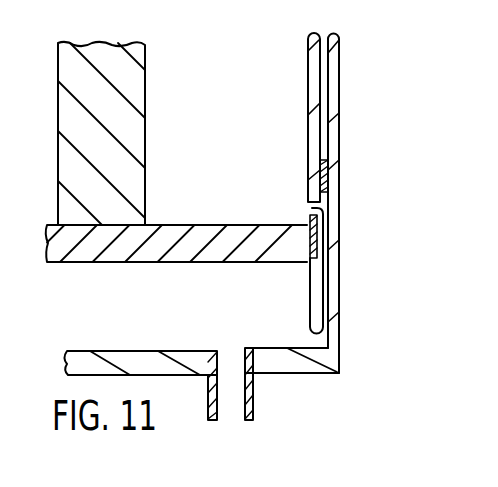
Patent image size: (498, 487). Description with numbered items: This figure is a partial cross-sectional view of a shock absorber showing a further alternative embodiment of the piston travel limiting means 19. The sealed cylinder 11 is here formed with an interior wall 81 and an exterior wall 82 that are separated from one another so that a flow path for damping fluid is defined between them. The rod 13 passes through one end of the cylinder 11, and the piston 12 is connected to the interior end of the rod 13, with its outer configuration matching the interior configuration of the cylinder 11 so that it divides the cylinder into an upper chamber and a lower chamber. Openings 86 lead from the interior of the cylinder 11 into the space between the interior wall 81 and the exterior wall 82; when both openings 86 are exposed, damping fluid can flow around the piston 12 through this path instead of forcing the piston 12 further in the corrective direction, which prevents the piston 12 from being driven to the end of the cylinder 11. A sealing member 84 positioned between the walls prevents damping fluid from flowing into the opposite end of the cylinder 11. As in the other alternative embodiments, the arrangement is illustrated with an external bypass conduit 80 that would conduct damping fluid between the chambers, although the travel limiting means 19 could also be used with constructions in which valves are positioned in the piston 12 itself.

The cylinder 11 is at (357, 109).
The piston 12 is at (202, 225).
The rod 13 is at (145, 97).
The piston travel limiting means 19 is at (367, 261).
The external bypass conduit 80 is at (253, 402).
The interior wall 81 is at (308, 135).
The exterior wall 82 is at (370, 173).
The sealing member 84 is at (328, 165).
The openings 86 is at (320, 211).